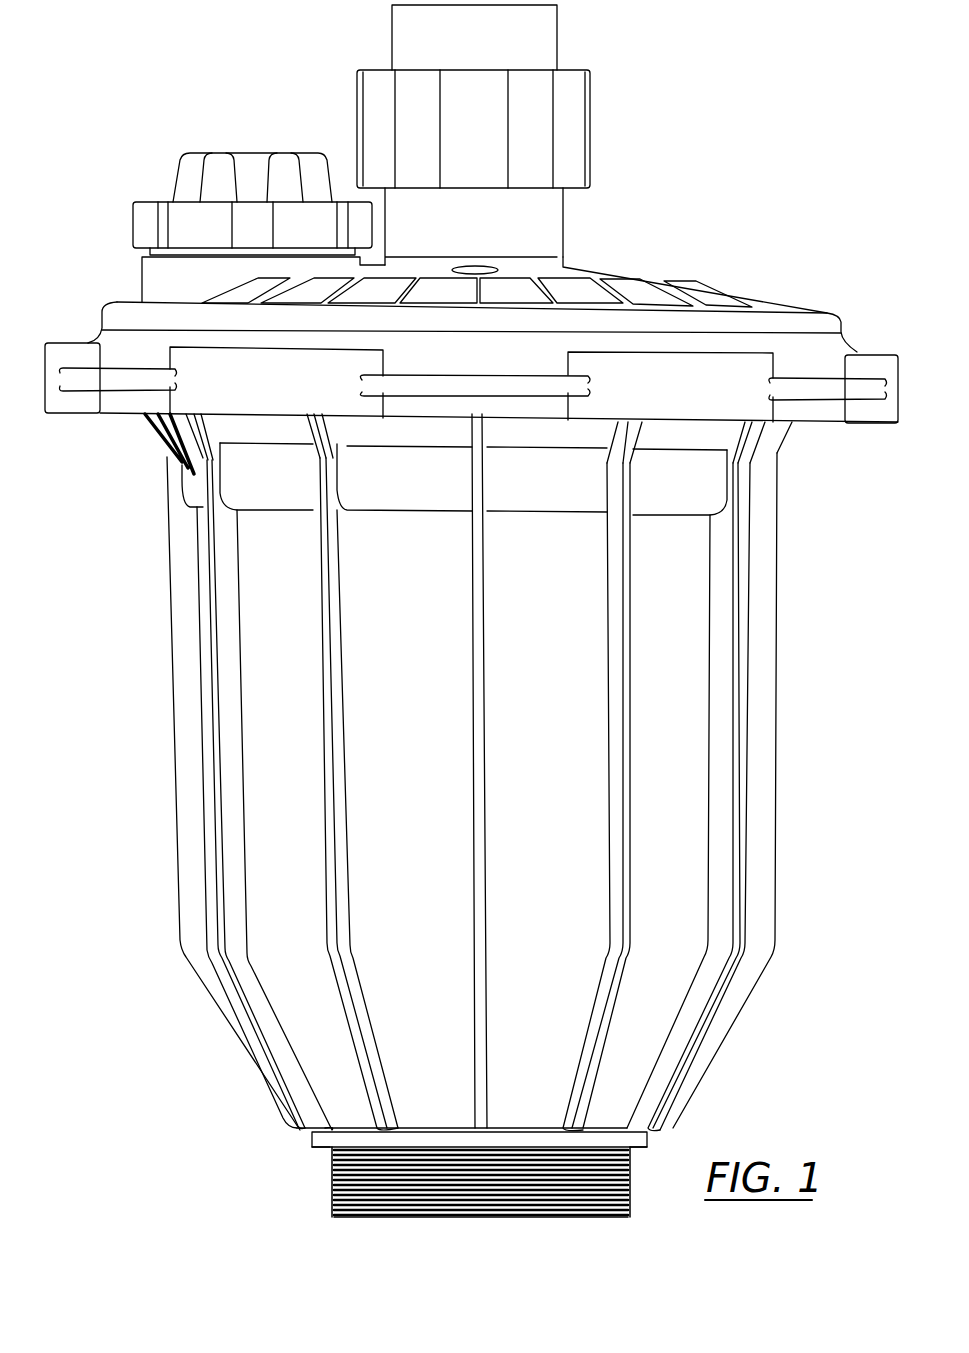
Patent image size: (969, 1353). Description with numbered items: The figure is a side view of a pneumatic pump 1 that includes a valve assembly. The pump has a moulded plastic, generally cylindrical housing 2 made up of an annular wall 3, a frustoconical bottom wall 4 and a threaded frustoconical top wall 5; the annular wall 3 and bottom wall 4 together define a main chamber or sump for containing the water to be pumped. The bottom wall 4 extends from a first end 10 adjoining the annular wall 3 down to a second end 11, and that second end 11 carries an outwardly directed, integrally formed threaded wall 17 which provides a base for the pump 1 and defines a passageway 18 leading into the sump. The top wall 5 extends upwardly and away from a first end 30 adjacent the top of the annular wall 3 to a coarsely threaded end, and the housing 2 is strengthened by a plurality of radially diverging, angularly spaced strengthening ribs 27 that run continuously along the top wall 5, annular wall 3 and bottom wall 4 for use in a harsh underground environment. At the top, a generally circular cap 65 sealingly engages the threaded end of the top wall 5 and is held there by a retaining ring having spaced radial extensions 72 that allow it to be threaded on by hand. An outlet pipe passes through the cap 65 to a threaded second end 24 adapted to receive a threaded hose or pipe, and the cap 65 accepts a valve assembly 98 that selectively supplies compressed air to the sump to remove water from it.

The pneumatic pump 1 is at (656, 160).
The threaded second end 24 is at (540, 48).
The valve assembly 98 is at (168, 170).
The cap 65 is at (608, 275).
The radial extensions 72 is at (723, 367).
The threaded frustoconical top wall 5 is at (723, 428).
The first end 30 is at (757, 500).
The annular wall 3 is at (265, 624).
The housing 2 is at (150, 789).
The strengthening ribs 27 is at (763, 617).
The first end 10 is at (733, 966).
The frustoconical bottom wall 4 is at (290, 1007).
The second end 11 is at (325, 1134).
The threaded wall 17 is at (332, 1170).
The passageway 18 is at (353, 1222).